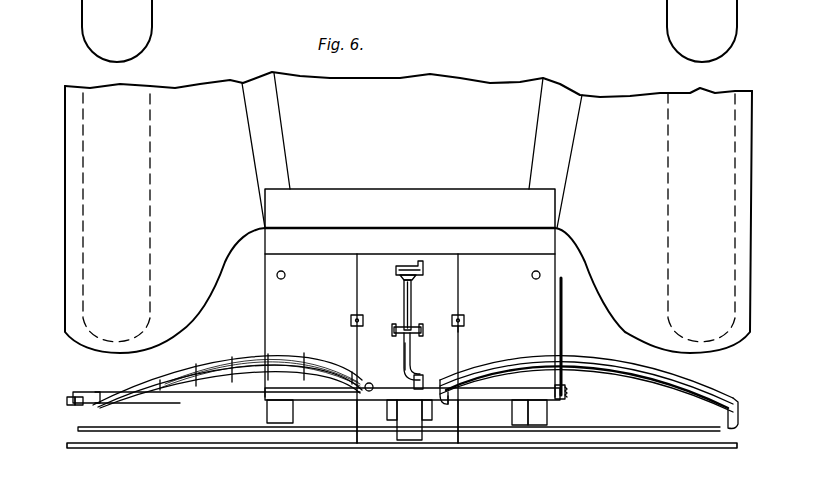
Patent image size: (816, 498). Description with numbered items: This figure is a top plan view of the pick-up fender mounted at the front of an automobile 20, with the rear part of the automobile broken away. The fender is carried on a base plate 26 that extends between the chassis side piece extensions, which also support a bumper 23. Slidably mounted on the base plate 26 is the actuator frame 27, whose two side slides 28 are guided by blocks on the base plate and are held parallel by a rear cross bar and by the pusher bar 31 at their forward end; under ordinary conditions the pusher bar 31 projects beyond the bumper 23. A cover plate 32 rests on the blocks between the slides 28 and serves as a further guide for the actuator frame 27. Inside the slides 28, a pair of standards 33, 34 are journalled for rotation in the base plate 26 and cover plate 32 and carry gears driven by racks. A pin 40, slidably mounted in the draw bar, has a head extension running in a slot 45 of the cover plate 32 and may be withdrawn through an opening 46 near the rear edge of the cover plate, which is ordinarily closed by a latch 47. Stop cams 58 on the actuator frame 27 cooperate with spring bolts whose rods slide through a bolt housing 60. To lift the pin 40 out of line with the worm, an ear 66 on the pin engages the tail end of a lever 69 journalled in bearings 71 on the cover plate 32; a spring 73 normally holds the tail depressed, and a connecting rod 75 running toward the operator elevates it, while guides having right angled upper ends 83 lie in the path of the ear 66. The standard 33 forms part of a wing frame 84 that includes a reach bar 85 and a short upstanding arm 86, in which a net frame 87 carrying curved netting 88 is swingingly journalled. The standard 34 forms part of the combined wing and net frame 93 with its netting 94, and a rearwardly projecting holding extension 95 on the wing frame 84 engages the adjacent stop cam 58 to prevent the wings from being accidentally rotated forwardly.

The automobile 20 is at (586, 90).
The bumper 23 is at (625, 434).
The base plate 26 is at (265, 312).
The actuator frame 27 is at (466, 333).
The slides 28 is at (360, 440).
The pusher bar 31 is at (712, 451).
The cover plate 32 is at (378, 262).
The standard 33 is at (372, 383).
The standard 34 is at (468, 410).
The pin 40 is at (388, 308).
The slot 45 is at (412, 292).
The opening 46 is at (420, 262).
The latch 47 is at (405, 263).
The stop cams 58 is at (355, 338).
The bolt housing 60 is at (351, 318).
The ear 66 is at (414, 336).
The lever 69 is at (401, 373).
The bearings 71 is at (423, 380).
The spring 73 is at (568, 396).
The connecting rod 75 is at (566, 330).
The right angled upper ends 83 is at (421, 326).
The wing frame 84 is at (80, 408).
The reach bar 85 is at (183, 394).
The short upstanding arm 86 is at (67, 402).
The net frame 87 is at (182, 362).
The netting 88 is at (100, 388).
The combined wing and net frame 93 is at (737, 397).
The netting 94 is at (640, 386).
The holding extension 95 is at (352, 370).